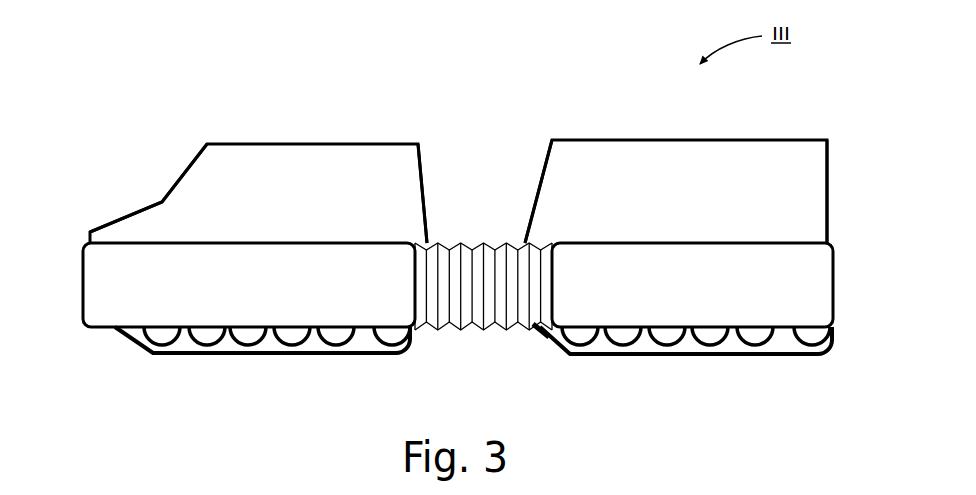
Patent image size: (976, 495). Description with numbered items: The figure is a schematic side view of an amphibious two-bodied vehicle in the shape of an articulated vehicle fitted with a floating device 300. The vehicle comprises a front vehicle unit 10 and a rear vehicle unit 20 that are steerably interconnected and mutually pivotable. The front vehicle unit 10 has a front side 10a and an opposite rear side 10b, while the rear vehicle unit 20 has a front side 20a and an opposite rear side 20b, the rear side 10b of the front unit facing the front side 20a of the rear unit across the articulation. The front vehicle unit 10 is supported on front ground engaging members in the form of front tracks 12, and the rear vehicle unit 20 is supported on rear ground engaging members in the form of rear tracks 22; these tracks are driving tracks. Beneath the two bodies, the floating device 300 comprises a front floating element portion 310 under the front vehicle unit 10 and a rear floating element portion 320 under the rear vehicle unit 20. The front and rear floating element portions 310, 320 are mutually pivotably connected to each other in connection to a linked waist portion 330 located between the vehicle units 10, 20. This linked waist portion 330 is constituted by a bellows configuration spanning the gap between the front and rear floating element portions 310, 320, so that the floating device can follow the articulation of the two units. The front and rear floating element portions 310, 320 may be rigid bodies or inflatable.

The front vehicle unit 10 is at (300, 140).
The front side 10a is at (177, 182).
The rear side 10b is at (424, 199).
The rear vehicle unit 20 is at (628, 138).
The front side 20a is at (546, 164).
The rear side 20b is at (827, 190).
The front tracks 12 is at (268, 357).
The rear tracks 22 is at (720, 357).
The front floating element portion 310 is at (110, 331).
The rear floating element portion 320 is at (837, 285).
The linked waist portion 330 is at (490, 332).
The floating device 300 is at (542, 340).